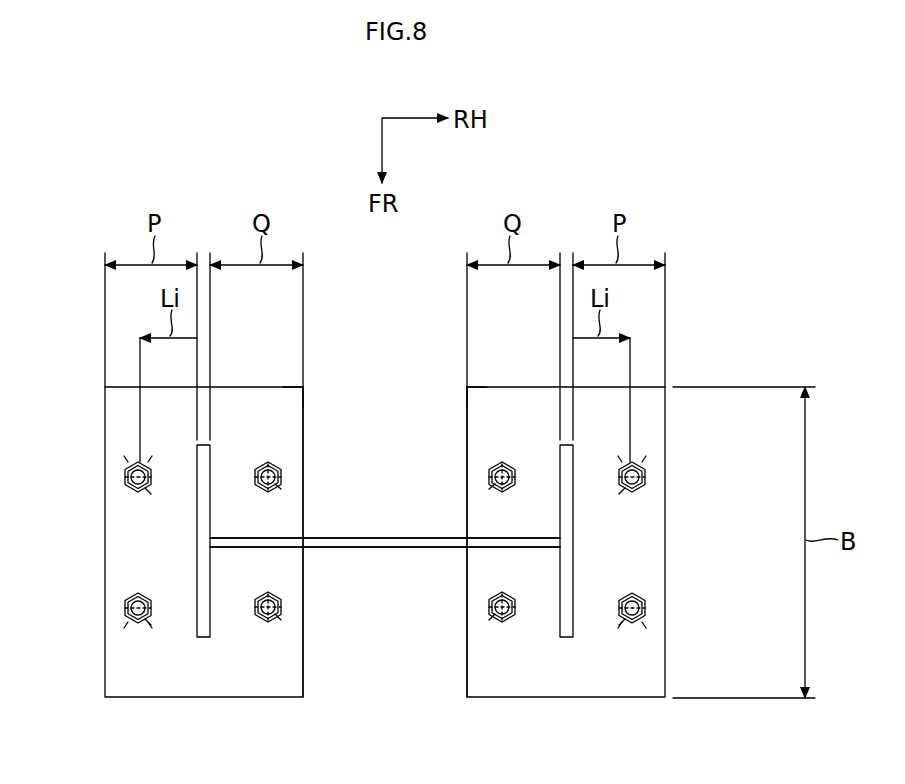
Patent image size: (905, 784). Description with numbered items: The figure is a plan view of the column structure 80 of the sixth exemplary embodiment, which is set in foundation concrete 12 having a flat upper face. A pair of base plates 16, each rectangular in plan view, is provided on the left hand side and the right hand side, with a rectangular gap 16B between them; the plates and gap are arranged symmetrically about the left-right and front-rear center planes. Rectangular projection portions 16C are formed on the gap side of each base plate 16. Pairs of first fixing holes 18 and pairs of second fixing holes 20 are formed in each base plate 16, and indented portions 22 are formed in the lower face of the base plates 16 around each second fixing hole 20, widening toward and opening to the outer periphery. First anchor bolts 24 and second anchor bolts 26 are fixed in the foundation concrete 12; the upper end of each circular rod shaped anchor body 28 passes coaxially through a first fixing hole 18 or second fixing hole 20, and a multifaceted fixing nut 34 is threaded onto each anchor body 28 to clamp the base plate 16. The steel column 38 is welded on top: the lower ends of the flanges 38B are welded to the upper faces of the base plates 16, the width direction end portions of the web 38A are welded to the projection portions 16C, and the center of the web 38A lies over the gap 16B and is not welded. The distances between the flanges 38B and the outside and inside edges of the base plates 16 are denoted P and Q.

The column structure 80 is at (96, 200).
The foundation concrete 12 is at (650, 184).
The base plate 16 is at (126, 386).
The gap 16B is at (464, 402).
The projection portion 16C is at (305, 386).
The first fixing hole 18 is at (128, 477).
The second fixing hole 20 is at (266, 464).
The indented portion 22 is at (120, 490).
The first anchor bolt 24 is at (128, 462).
The second anchor bolt 26 is at (276, 463).
The anchor body 28 is at (152, 474).
The fixing nut 34 is at (148, 488).
The steel column 38 is at (384, 537).
The web 38A is at (388, 548).
The flange 38B is at (212, 566).